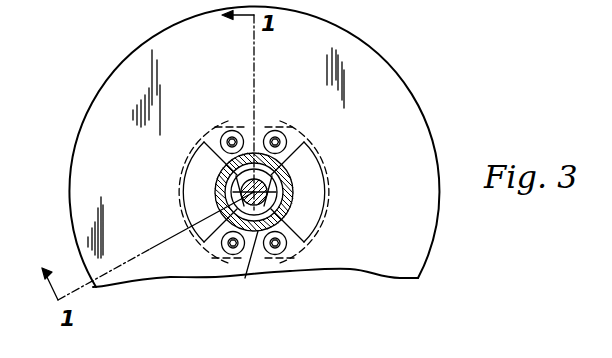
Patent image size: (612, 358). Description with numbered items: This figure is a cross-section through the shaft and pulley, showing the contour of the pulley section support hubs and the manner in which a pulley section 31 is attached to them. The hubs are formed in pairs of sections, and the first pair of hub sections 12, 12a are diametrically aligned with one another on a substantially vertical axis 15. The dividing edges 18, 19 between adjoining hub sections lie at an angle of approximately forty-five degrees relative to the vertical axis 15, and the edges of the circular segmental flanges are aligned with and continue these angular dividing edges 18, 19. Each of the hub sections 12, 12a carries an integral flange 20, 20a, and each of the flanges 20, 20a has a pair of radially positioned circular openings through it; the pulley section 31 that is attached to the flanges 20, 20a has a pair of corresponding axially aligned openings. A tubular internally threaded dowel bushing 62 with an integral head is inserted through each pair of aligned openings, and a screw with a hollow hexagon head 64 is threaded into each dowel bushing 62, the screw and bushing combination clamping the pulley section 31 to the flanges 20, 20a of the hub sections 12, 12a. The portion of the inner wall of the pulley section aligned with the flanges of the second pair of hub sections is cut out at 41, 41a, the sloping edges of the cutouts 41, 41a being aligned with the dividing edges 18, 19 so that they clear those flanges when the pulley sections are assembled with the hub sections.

The hub section 12 is at (294, 154).
The hub section 12a is at (254, 254).
The vertical axis 15 is at (255, 97).
The dividing edge 18 is at (228, 155).
The dividing edge 19 is at (321, 168).
The flange 20 is at (213, 138).
The flange 20a is at (305, 246).
The pulley section 31 is at (418, 106).
The cutout 41 is at (186, 212).
The cutout 41a is at (318, 213).
The dowel bushing 62 is at (284, 136).
The screw head 64 is at (230, 249).